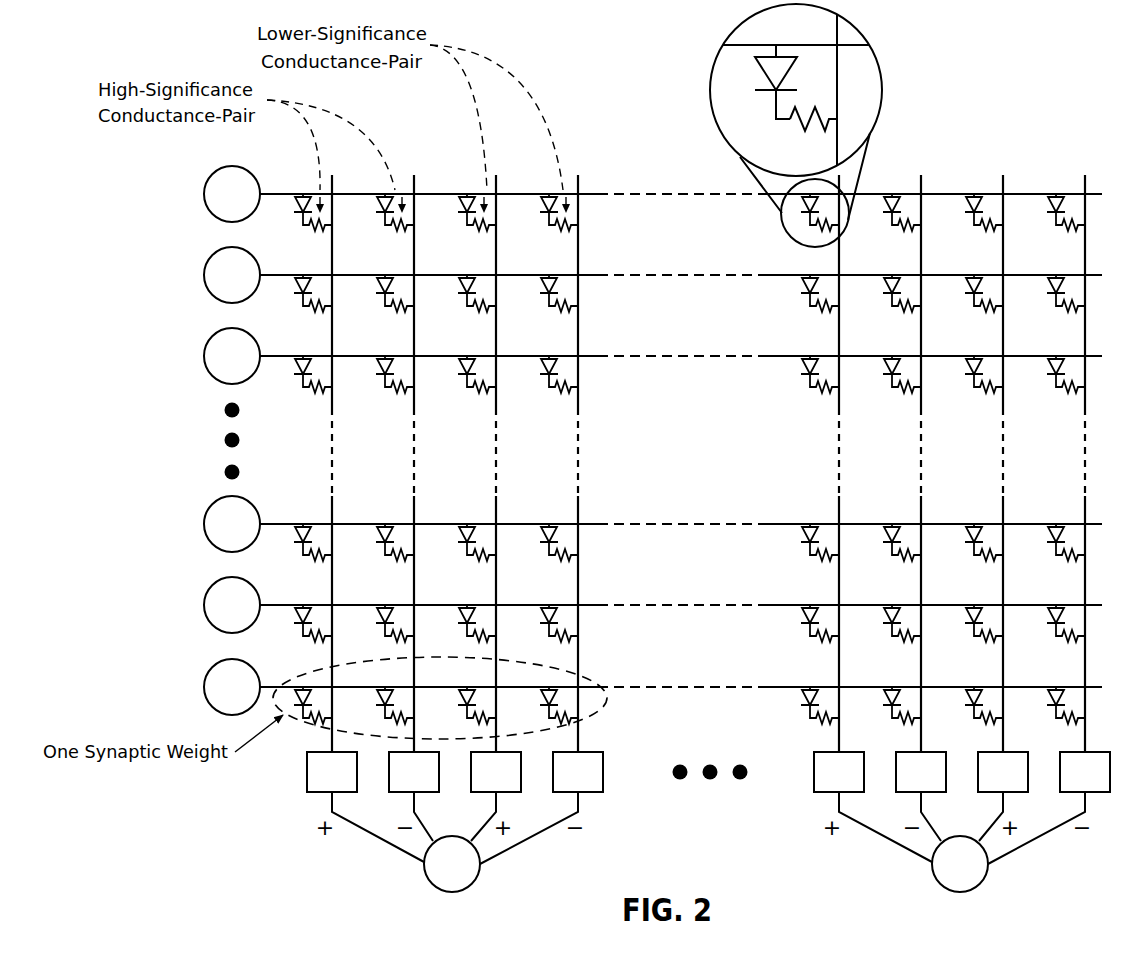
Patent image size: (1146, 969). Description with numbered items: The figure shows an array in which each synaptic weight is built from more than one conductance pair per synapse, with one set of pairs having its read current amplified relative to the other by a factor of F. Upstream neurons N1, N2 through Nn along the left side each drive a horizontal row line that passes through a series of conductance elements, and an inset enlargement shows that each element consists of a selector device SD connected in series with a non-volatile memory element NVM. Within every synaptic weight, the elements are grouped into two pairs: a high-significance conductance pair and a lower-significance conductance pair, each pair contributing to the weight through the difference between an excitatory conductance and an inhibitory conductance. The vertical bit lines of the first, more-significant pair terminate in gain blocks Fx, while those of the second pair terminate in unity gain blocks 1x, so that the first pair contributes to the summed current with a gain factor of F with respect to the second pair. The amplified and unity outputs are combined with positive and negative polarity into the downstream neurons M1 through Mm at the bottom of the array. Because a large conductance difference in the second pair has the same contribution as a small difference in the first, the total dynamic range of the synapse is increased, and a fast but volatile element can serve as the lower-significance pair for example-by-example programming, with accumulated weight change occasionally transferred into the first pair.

The upstream neuron N1 is at (232, 194).
The upstream neuron N2 is at (232, 275).
The upstream neuron Nn is at (232, 687).
The downstream neuron M1 is at (455, 842).
The downstream neuron Mm is at (962, 842).
The gain factor block Fx is at (626, 772).
The unity gain block 1x is at (790, 772).
The selector device SD is at (755, 72).
The non-volatile memory element NVM is at (830, 107).